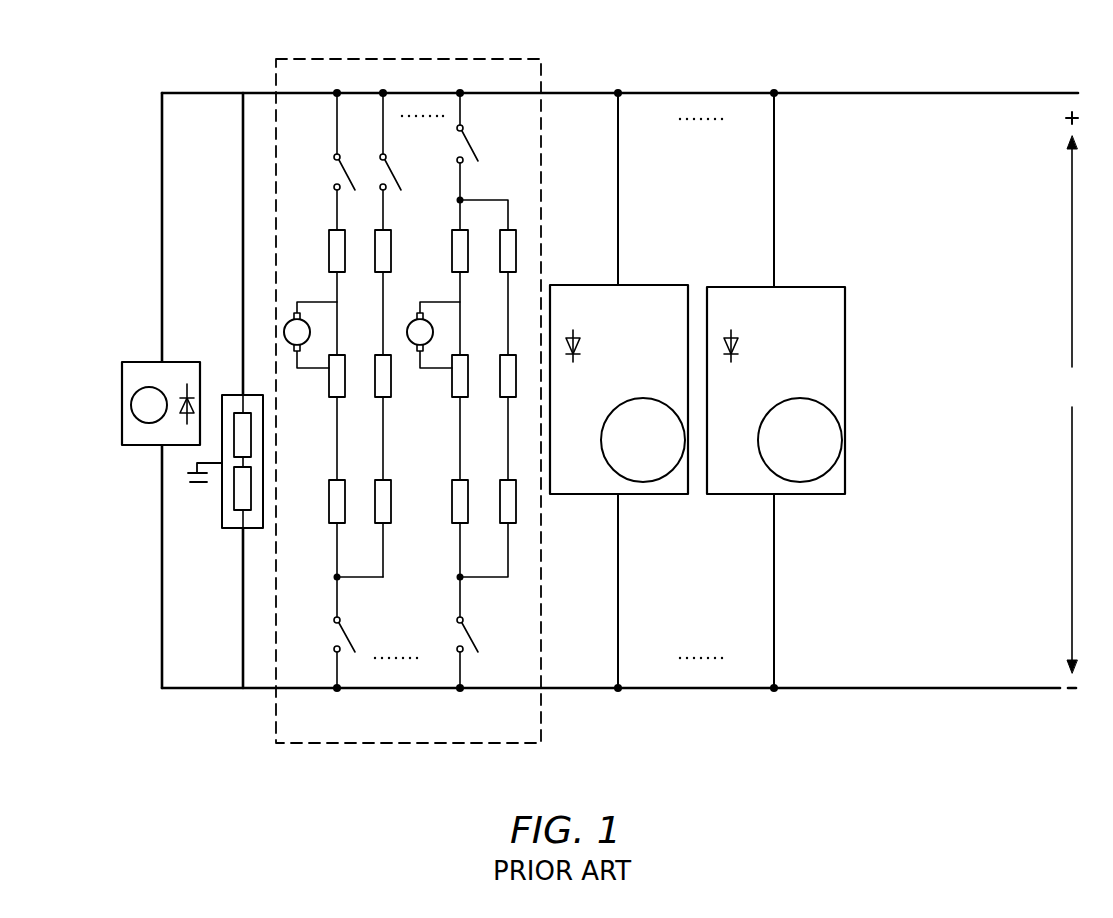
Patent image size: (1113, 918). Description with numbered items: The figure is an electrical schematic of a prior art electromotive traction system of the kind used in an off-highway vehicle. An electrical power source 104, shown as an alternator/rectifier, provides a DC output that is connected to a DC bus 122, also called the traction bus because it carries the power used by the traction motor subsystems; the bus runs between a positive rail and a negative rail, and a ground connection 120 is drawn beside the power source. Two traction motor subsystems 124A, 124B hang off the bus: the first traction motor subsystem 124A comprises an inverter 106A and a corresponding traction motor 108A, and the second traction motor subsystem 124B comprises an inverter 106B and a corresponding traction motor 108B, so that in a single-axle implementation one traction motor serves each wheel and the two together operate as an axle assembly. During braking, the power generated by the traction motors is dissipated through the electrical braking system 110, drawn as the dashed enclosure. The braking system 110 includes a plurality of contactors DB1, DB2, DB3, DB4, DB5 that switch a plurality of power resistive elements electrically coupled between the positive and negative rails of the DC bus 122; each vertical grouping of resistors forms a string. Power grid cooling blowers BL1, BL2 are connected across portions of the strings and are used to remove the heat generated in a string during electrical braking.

The electrical power source 104 is at (122, 409).
The electrical braking system 110 is at (400, 58).
The ground 120 is at (220, 493).
The DC bus 122 is at (1073, 404).
The inverter 106A is at (580, 345).
The inverter 106B is at (738, 347).
The traction motor subsystem 124A is at (565, 495).
The traction motor subsystem 124B is at (846, 332).
The traction motor 108A is at (643, 482).
The traction motor 108B is at (838, 463).
The contactor DB1 is at (348, 177).
The contactor DB2 is at (396, 174).
The contactor DB3 is at (348, 637).
The contactor DB4 is at (475, 147).
The contactor DB5 is at (470, 637).
The power grid cooling blower BL1 is at (308, 301).
The power grid cooling blower BL2 is at (438, 301).